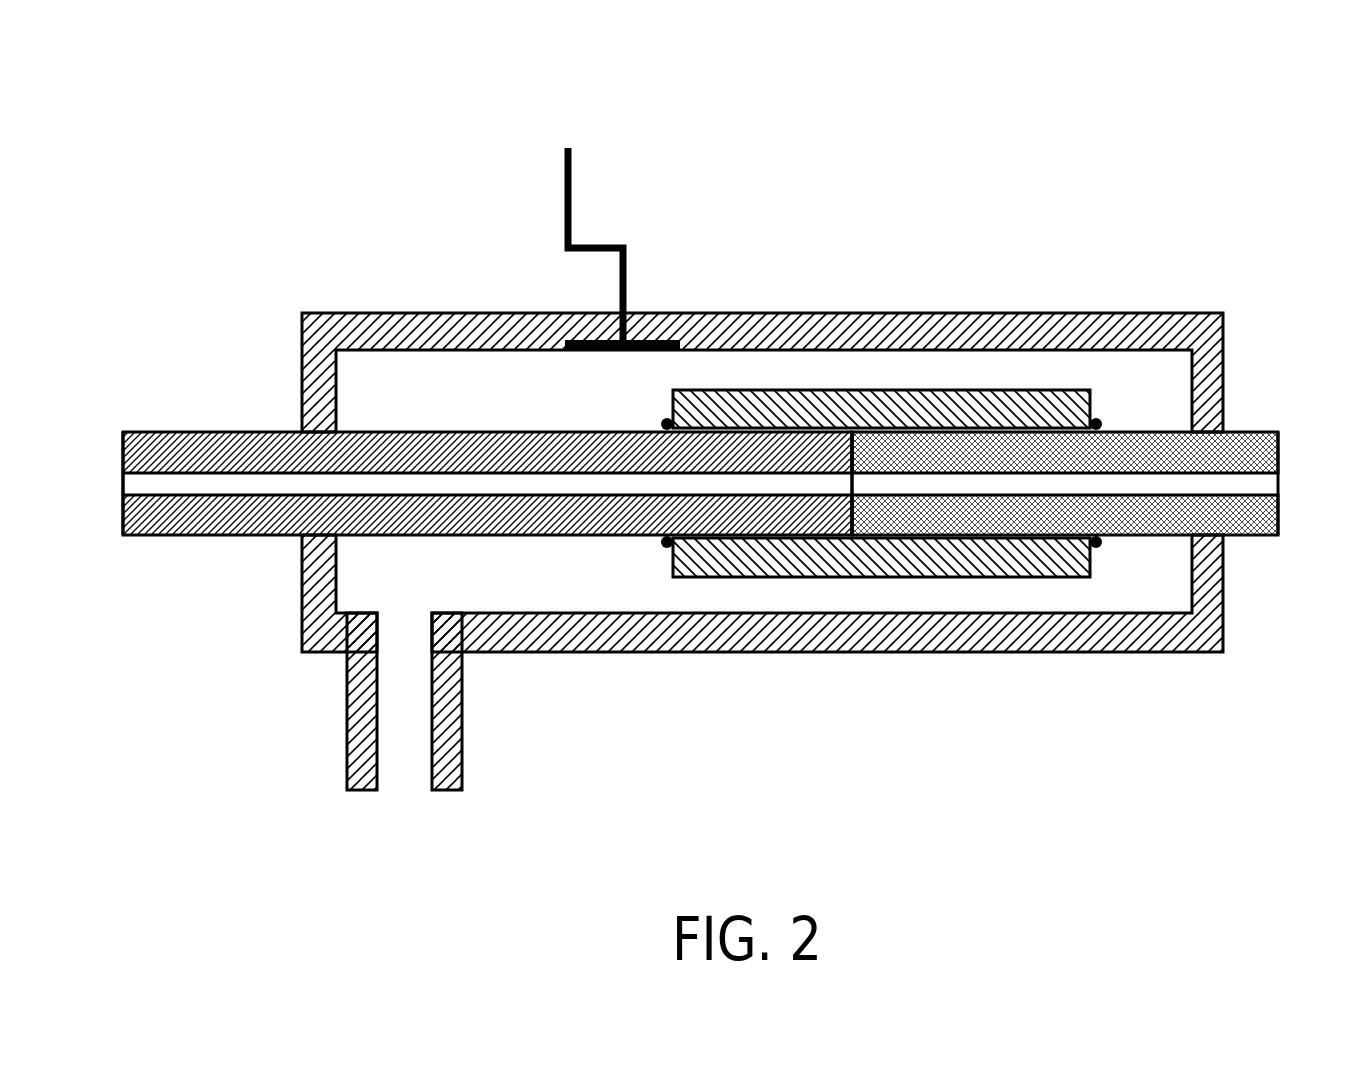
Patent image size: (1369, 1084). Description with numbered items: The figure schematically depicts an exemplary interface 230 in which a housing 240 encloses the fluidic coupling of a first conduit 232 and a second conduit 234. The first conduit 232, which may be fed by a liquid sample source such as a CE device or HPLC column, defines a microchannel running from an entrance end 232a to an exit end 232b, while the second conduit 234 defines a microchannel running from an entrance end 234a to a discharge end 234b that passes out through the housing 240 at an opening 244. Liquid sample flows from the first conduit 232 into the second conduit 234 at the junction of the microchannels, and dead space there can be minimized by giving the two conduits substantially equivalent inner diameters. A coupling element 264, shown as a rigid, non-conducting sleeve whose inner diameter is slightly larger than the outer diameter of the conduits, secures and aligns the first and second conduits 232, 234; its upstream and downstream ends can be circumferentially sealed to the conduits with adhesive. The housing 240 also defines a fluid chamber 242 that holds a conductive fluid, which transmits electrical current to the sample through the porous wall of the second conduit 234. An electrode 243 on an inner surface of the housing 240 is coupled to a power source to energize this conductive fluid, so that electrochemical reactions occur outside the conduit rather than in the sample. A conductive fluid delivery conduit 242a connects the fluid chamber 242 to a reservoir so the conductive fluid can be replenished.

The interface 230 is at (363, 145).
The first conduit 232 is at (253, 431).
The entrance end 232a is at (123, 431).
The exit end 232b is at (849, 515).
The second conduit 234 is at (1135, 536).
The entrance end 234a is at (868, 463).
The discharge end 234b is at (1258, 429).
The housing 240 is at (805, 313).
The fluid chamber 242 is at (413, 404).
The conductive fluid delivery conduit 242a is at (462, 745).
The electrode 243 is at (648, 335).
The opening 244 is at (1226, 547).
The coupling element 264 is at (957, 577).